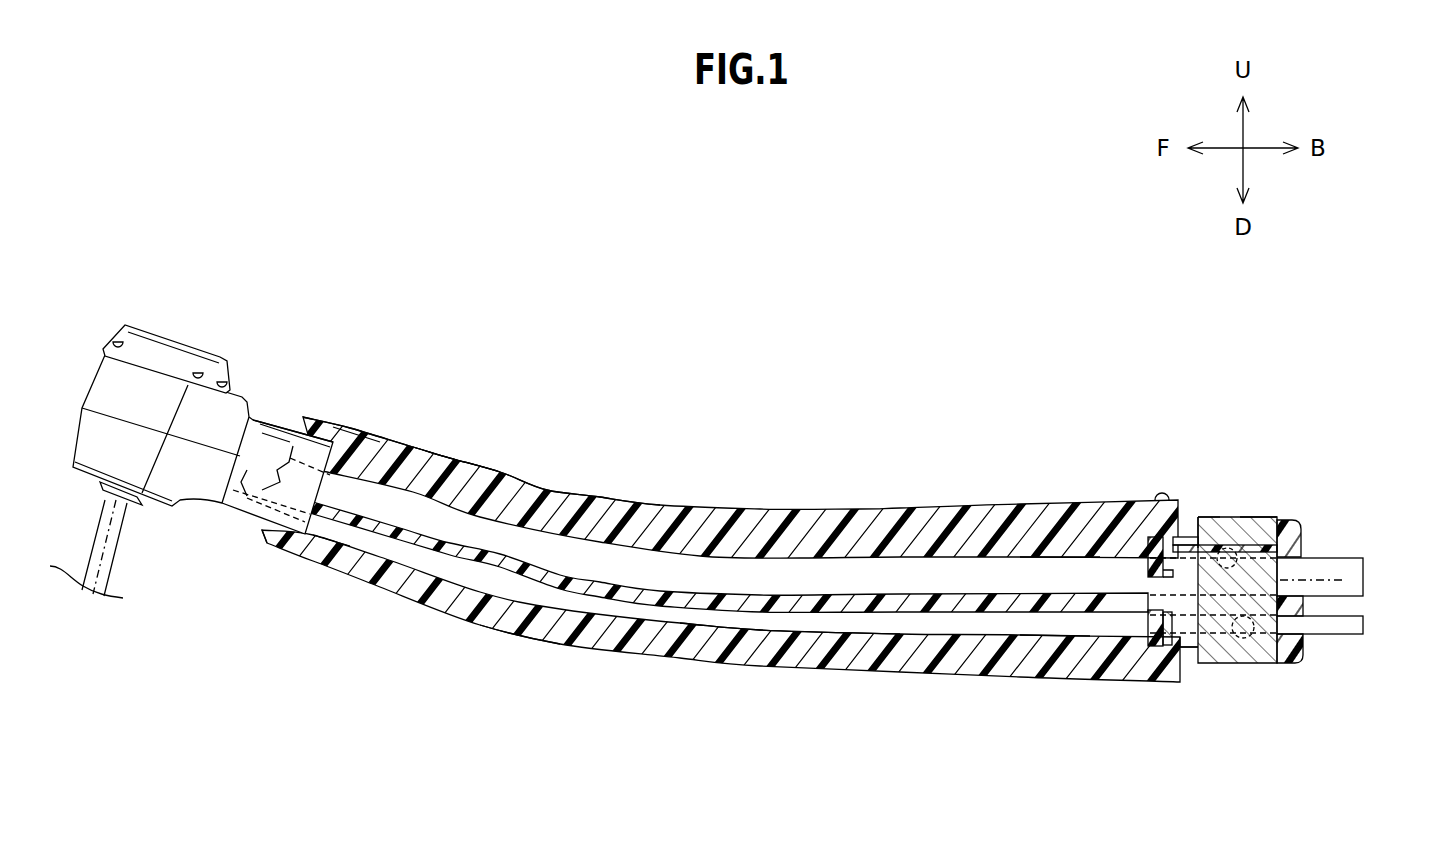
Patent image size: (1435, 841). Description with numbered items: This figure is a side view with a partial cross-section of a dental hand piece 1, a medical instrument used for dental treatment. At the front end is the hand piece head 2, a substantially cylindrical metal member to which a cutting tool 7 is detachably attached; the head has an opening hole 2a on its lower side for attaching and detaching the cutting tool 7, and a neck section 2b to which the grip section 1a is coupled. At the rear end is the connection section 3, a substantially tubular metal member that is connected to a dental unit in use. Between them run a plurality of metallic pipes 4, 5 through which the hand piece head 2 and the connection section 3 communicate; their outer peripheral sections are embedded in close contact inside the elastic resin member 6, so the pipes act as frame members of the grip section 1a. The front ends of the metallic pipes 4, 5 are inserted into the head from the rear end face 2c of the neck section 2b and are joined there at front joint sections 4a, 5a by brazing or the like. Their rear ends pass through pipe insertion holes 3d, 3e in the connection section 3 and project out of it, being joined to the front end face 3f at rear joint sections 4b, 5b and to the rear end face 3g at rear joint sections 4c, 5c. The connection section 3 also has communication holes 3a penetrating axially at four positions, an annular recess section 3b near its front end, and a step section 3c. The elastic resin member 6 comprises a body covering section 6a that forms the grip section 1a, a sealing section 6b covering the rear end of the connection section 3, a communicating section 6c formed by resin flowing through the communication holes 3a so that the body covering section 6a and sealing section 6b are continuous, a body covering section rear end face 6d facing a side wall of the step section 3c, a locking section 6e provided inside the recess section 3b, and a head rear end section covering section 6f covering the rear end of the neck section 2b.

The dental hand piece 1 is at (738, 454).
The grip section 1a is at (578, 486).
The hand piece head 2 is at (92, 474).
The opening hole 2a is at (147, 504).
The neck section 2b is at (280, 417).
The rear end face 2c is at (363, 457).
The connection section 3 is at (1253, 668).
The communication holes 3a is at (1238, 580).
The recess section 3b is at (1215, 640).
The step section 3c is at (1192, 535).
The pipe insertion hole 3d is at (1345, 580).
The pipe insertion hole 3e is at (1232, 640).
The front end face 3f is at (1147, 580).
The rear end face 3g is at (1308, 663).
The metallic pipe 4 is at (820, 557).
The front joint section 4a is at (413, 470).
The rear joint section 4b is at (1090, 633).
The rear joint section 4c is at (1306, 552).
The metallic pipe 5 is at (787, 633).
The front joint section 5a is at (313, 524).
The rear joint section 5b is at (1137, 613).
The rear joint section 5c is at (1303, 598).
The elastic resin member 6 is at (583, 647).
The body covering section 6a is at (480, 617).
The sealing section 6b is at (1300, 532).
The communicating section 6c is at (1253, 517).
The body covering section rear end face 6d is at (1193, 517).
The locking section 6e is at (1147, 580).
The head rear end section covering section 6f is at (285, 528).
The cutting tool 7 is at (112, 547).